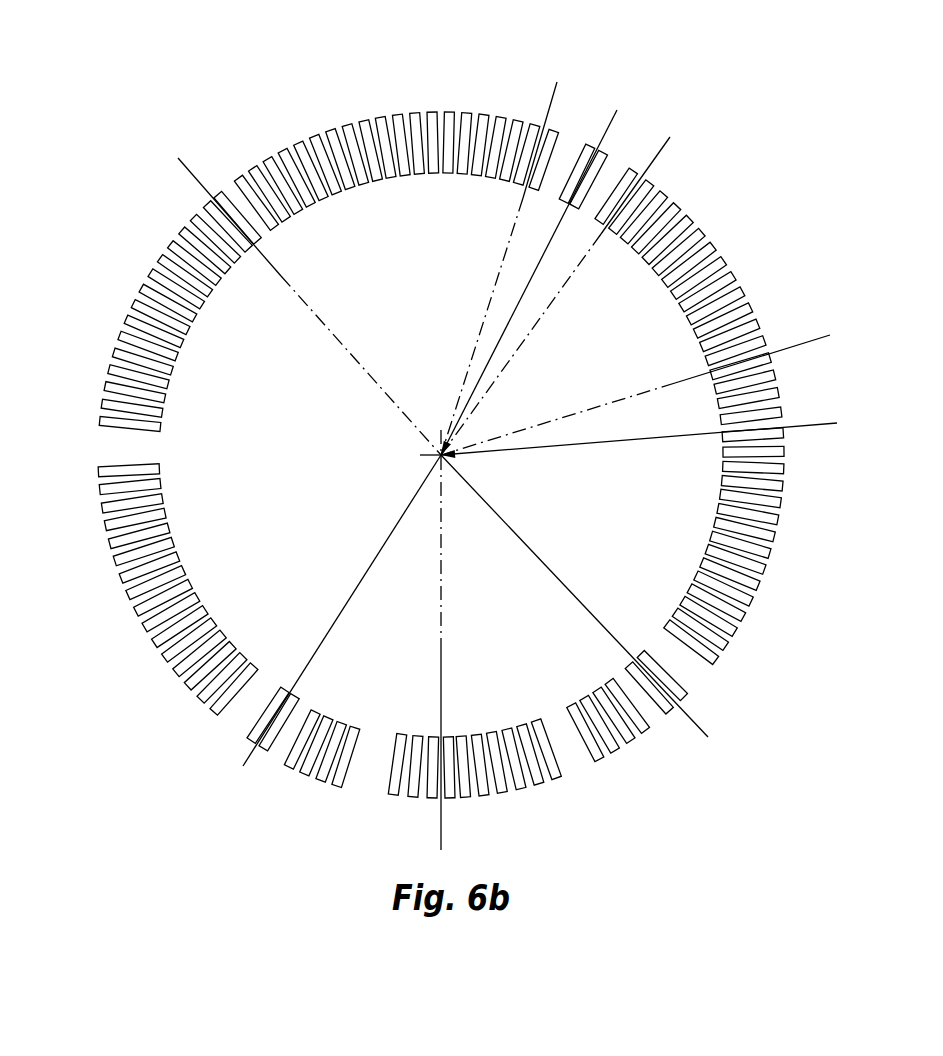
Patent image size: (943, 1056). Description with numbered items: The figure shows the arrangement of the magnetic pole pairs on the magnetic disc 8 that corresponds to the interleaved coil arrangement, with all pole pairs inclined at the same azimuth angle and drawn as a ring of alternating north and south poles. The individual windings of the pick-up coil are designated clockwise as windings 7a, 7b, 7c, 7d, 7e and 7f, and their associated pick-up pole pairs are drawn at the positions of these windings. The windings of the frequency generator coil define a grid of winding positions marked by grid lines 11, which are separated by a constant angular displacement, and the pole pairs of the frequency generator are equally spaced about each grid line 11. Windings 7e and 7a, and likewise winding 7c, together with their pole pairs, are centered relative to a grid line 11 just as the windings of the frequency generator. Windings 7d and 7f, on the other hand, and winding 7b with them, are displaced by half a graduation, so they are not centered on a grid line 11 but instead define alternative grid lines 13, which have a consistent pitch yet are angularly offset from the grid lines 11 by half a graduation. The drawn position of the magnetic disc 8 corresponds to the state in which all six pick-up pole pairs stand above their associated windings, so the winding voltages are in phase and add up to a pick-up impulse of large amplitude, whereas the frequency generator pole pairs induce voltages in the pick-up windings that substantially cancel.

The winding of coil 7 7a is at (445, 704).
The winding of coil 7 7b is at (308, 665).
The winding of coil 7 7c is at (268, 270).
The winding of coil 7 7d is at (550, 227).
The winding of coil 7 7e is at (683, 432).
The winding of coil 7 7f is at (623, 641).
The magnetic disc 8 is at (222, 748).
The grid lines 11 is at (180, 157).
The alternative grid lines 13 is at (615, 110).